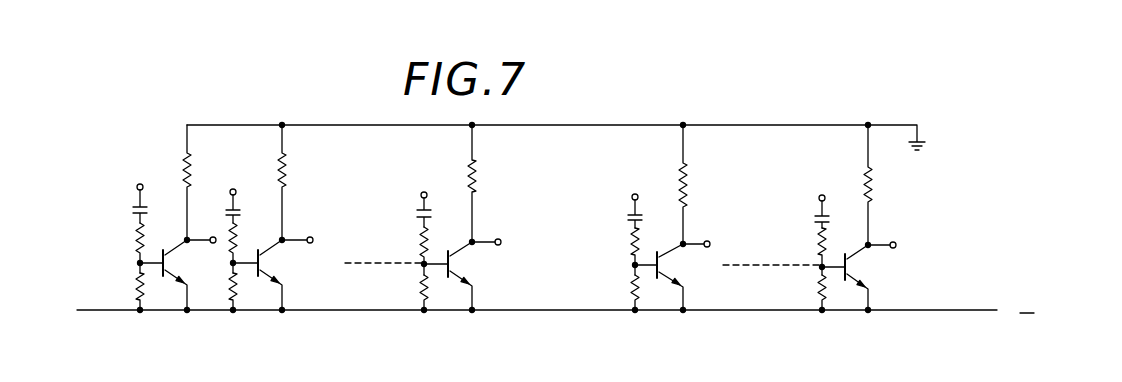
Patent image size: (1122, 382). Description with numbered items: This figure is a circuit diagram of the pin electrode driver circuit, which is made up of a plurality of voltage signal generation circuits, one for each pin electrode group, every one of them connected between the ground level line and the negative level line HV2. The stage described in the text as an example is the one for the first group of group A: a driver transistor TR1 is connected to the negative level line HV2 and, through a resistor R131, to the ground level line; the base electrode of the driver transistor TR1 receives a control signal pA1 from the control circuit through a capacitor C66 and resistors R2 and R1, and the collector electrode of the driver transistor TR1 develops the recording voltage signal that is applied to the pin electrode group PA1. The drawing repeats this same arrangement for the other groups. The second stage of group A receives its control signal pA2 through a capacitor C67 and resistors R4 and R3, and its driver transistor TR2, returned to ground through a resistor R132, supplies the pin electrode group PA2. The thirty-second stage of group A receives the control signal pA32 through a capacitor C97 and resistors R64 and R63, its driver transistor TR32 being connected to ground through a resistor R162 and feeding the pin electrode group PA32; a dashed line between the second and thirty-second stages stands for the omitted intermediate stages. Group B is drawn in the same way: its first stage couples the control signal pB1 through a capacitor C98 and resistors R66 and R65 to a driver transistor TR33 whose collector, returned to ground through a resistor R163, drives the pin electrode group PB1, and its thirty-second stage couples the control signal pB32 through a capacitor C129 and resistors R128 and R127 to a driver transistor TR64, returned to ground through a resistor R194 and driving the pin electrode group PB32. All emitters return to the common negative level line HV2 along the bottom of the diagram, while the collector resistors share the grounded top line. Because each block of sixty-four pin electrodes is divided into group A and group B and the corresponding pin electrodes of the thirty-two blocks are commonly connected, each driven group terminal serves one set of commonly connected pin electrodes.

The control signal pA1 is at (134, 174).
The capacitor C66 is at (119, 210).
The resistor R2 is at (162, 217).
The resistor R1 is at (162, 279).
The resistor R131 is at (169, 140).
The driver transistor TR1 is at (200, 250).
The pin electrode group PA1 is at (208, 260).
The input terminal p^A_2 pA2 is at (227, 178).
The capacitor C67 is at (218, 213).
The resistor R'4 R4 is at (257, 217).
The resistor R'3 R3 is at (255, 279).
The resistor R'132 R132 is at (259, 150).
The transistor TR'2 TR2 is at (295, 250).
The pin electrode group PA2 is at (310, 256).
The input terminal p^A_32 pA32 is at (416, 180).
The capacitor C97 is at (403, 216).
The resistor R'64 R64 is at (448, 223).
The resistor R'63 R63 is at (460, 291).
The resistor R'162 R162 is at (452, 155).
The transistor TR'32 TR32 is at (500, 253).
The pin electrode group PA32 is at (504, 255).
The input terminal p^B_1 pB1 is at (634, 181).
The capacitor C98 is at (615, 215).
The resistor R'66 R66 is at (614, 231).
The resistor R'65 R65 is at (614, 276).
The resistor R'163 R163 is at (709, 170).
The transistor TR'33 TR33 is at (710, 253).
The pin electrode group PB1 is at (712, 252).
The input terminal p^B_32 pB32 is at (821, 182).
The capacitor C129 is at (803, 216).
The resistor R'128 R128 is at (807, 232).
The resistor R'127 R127 is at (807, 275).
The resistor R'194 R194 is at (897, 173).
The transistor TR'64 TR64 is at (888, 255).
The pin electrode group PB32 is at (900, 253).
The negative level line HV2 is at (1048, 316).